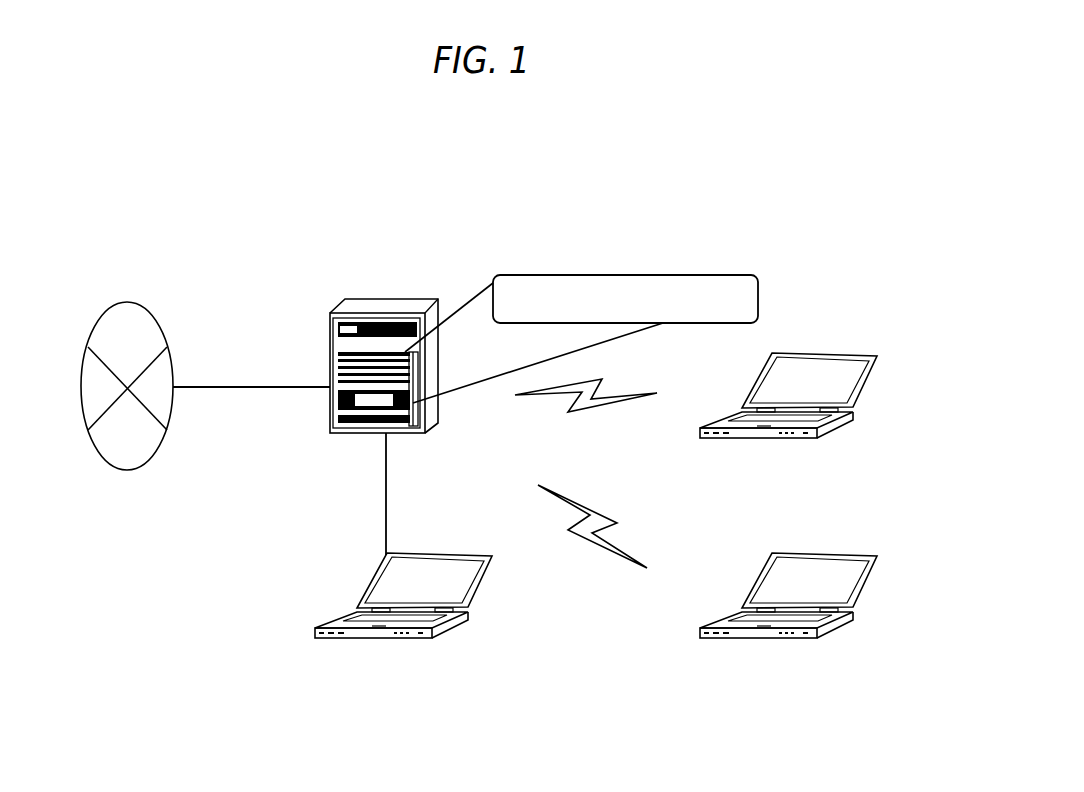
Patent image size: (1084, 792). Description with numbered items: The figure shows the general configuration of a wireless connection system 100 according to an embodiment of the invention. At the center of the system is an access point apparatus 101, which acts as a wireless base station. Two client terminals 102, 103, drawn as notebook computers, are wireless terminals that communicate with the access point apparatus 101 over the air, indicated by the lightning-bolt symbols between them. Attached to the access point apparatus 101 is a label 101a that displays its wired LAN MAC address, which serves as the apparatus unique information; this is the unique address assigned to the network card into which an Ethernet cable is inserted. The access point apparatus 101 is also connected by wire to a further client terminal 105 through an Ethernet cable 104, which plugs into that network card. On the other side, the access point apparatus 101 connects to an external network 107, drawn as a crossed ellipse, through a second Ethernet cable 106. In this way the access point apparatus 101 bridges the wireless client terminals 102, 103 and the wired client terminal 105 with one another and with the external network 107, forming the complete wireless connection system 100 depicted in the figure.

The wireless connection system 100 is at (579, 167).
The access point apparatus 101 is at (388, 299).
The label 101a is at (683, 275).
The client terminal 102 is at (770, 442).
The client terminal 103 is at (770, 642).
The Ethernet cable 104 is at (386, 495).
The client terminal 105 is at (388, 647).
The Ethernet cable 106 is at (243, 385).
The external network 107 is at (127, 302).